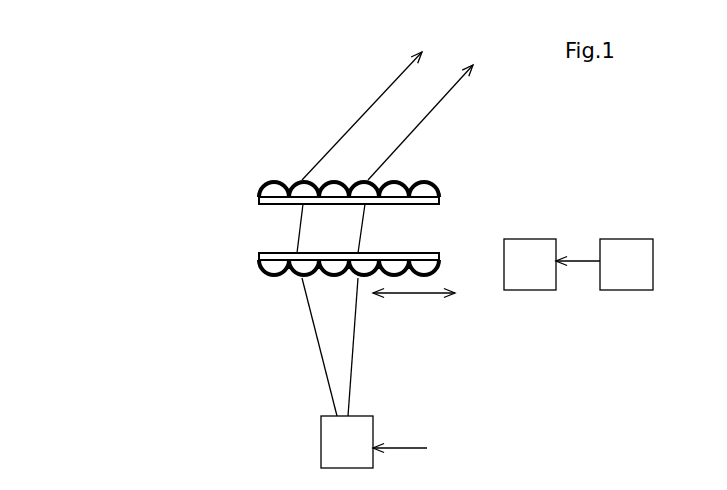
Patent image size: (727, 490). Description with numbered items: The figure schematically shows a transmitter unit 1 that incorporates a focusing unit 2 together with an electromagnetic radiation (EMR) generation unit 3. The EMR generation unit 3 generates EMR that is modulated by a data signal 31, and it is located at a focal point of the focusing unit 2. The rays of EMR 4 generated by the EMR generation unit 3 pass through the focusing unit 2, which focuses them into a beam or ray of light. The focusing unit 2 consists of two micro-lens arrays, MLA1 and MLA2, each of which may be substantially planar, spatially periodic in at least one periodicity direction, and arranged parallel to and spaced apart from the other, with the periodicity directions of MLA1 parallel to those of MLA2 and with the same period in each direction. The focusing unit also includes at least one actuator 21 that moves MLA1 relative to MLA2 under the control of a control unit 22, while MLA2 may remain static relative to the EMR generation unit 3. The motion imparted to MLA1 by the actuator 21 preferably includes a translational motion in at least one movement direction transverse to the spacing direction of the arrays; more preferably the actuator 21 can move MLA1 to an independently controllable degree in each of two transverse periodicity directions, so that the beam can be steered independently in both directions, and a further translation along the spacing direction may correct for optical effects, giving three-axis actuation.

The transmitter unit 1 is at (100, 72).
The focusing unit 2 is at (93, 148).
The first micro-lens array MLA1 is at (265, 272).
The second micro-lens array MLA2 is at (262, 192).
The electromagnetic radiation generation unit 3 is at (321, 439).
The data signal 31 is at (429, 450).
The rays of EMR 4 is at (388, 100).
The actuator 21 is at (530, 290).
The control unit 22 is at (633, 290).